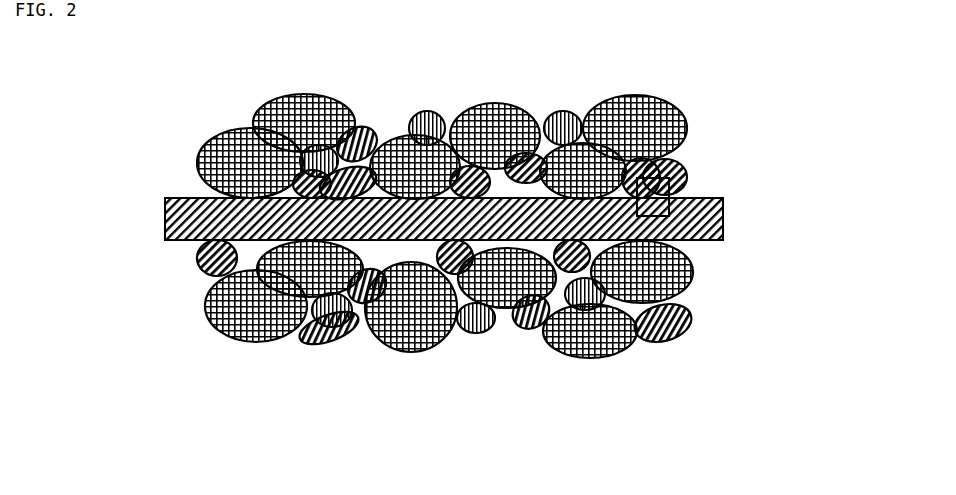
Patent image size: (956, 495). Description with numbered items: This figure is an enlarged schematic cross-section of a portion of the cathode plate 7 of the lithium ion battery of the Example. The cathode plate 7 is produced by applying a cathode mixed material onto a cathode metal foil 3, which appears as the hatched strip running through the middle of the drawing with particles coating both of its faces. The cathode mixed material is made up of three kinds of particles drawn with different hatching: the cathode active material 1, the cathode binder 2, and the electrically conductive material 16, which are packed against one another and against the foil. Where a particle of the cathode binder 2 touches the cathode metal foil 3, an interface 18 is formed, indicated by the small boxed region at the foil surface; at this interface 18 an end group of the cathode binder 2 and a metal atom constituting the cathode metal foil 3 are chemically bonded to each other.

The cathode active material 1 is at (256, 322).
The cathode binder 2 is at (205, 275).
The cathode metal foil 3 is at (185, 198).
The cathode plate 7 is at (665, 360).
The electrically conductive material 16 is at (473, 332).
The interface 18 is at (648, 178).